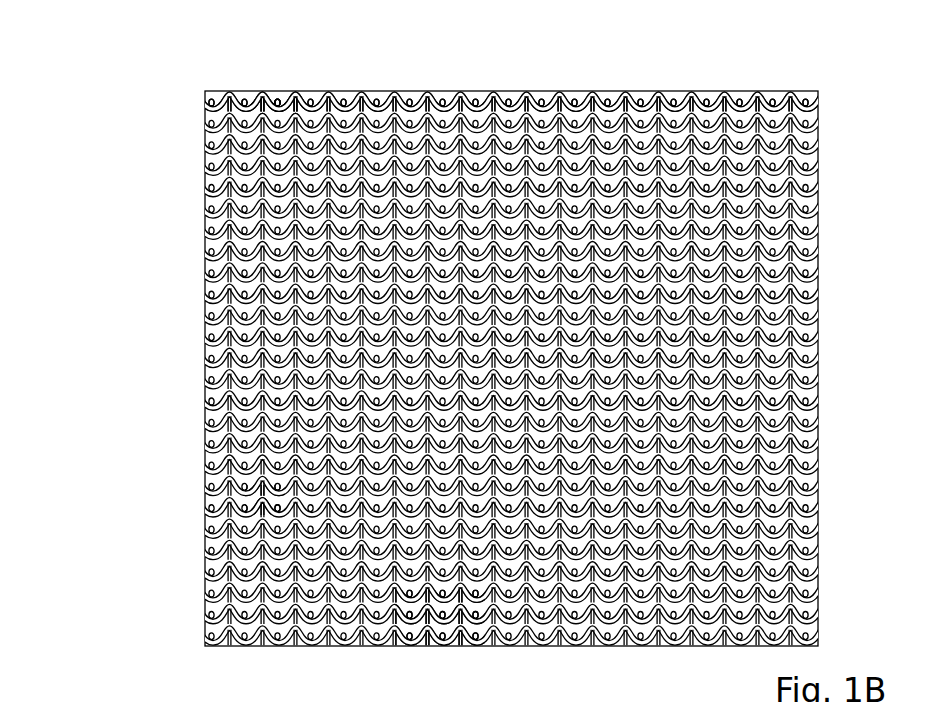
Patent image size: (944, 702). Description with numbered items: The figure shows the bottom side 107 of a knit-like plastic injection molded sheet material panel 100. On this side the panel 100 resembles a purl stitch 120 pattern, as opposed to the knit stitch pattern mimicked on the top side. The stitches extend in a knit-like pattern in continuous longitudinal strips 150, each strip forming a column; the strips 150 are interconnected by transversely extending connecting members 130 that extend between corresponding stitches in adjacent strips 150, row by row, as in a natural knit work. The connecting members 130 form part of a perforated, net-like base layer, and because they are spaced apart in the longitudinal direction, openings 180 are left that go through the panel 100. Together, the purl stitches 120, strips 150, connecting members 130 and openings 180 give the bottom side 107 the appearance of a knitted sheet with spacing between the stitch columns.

The panel 100 is at (112, 163).
The bottom side 107 is at (265, 503).
The purl stitch 120 is at (268, 107).
The connecting members 130 is at (282, 106).
The longitudinal strips 150 is at (428, 85).
The openings 180 is at (413, 617).